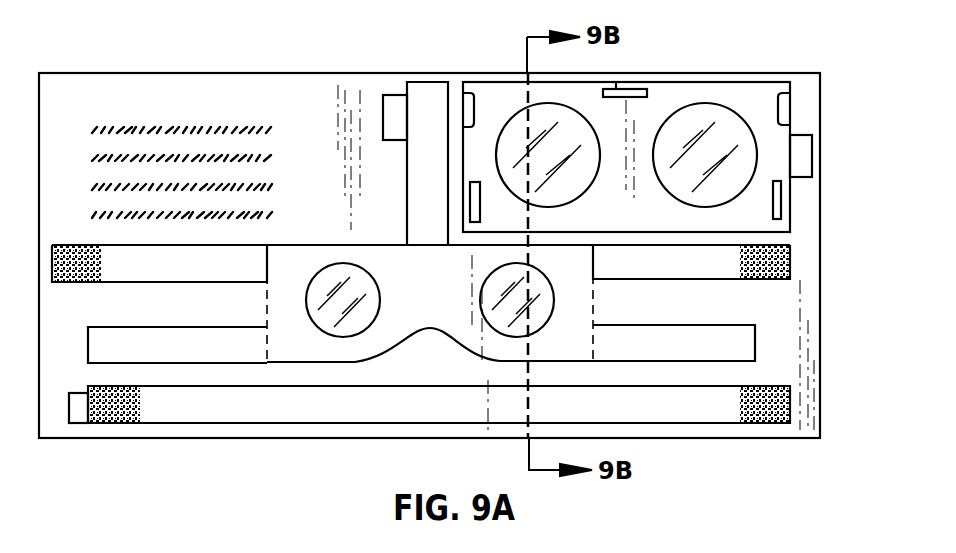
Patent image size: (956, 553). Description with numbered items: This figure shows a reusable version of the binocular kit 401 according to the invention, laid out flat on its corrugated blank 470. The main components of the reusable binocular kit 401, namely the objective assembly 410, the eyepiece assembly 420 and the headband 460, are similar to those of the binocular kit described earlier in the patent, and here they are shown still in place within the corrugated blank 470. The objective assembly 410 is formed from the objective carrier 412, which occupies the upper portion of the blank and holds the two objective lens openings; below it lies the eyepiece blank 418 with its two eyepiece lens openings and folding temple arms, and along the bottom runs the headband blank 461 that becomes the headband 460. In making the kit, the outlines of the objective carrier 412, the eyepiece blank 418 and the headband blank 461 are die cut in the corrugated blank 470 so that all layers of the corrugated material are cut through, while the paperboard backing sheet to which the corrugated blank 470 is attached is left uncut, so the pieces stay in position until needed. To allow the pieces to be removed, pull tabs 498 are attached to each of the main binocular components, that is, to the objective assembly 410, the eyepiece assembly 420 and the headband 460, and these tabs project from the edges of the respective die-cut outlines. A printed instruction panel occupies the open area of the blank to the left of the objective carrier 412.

The reusable binocular kit 401 is at (670, 32).
The objective assembly 410 is at (671, 133).
The objective carrier 412 is at (732, 82).
The eyepiece blank 418 is at (267, 308).
The eyepiece assembly 420 is at (682, 302).
The headband 460 is at (632, 424).
The headband blank 461 is at (277, 424).
The corrugated blank 470 is at (762, 438).
The pull tabs 498 is at (393, 95).